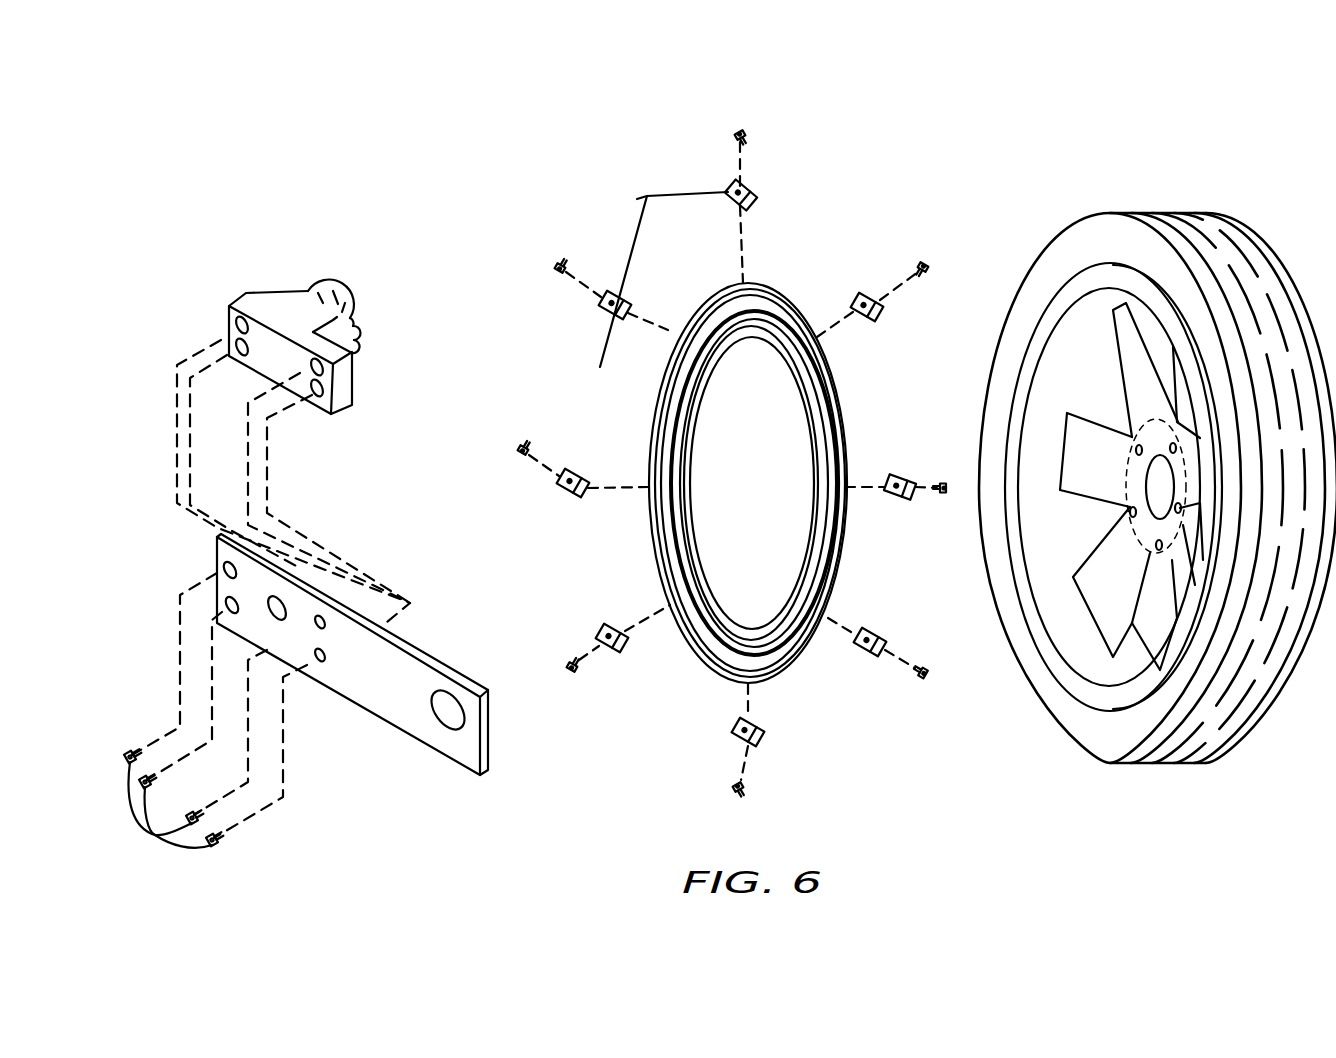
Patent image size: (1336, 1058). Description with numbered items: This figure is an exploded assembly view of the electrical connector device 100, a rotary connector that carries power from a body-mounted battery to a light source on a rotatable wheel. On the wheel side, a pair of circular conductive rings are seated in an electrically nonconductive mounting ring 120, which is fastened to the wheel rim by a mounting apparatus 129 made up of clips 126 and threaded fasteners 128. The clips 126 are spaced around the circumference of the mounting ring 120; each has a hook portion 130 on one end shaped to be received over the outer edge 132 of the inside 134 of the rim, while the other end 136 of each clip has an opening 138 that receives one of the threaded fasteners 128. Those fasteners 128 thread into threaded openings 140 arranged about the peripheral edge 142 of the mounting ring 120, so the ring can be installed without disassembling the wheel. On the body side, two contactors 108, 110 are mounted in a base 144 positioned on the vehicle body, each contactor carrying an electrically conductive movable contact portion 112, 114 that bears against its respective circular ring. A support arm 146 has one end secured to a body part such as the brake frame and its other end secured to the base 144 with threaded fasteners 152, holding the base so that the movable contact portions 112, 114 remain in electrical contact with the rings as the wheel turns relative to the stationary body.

The electrical connector device 100 is at (469, 157).
The contactor 108 is at (327, 291).
The contactor 110 is at (360, 332).
The movable contact portion 112 is at (357, 317).
The movable contact portion 114 is at (365, 347).
The mounting ring 120 is at (790, 516).
The clips 126 is at (749, 190).
The fasteners 128 is at (746, 130).
The mounting apparatus 129 is at (570, 810).
The hook portion 130 is at (746, 201).
The outer edge 132 is at (1140, 270).
The inside of the rim 134 is at (1101, 282).
The other end of the clip 136 is at (651, 273).
The opening 138 is at (733, 193).
The threaded openings 140 is at (825, 613).
The peripheral edge 142 is at (846, 548).
The base 144 is at (280, 323).
The support arm 146 is at (405, 707).
The threaded fasteners 152 is at (155, 835).